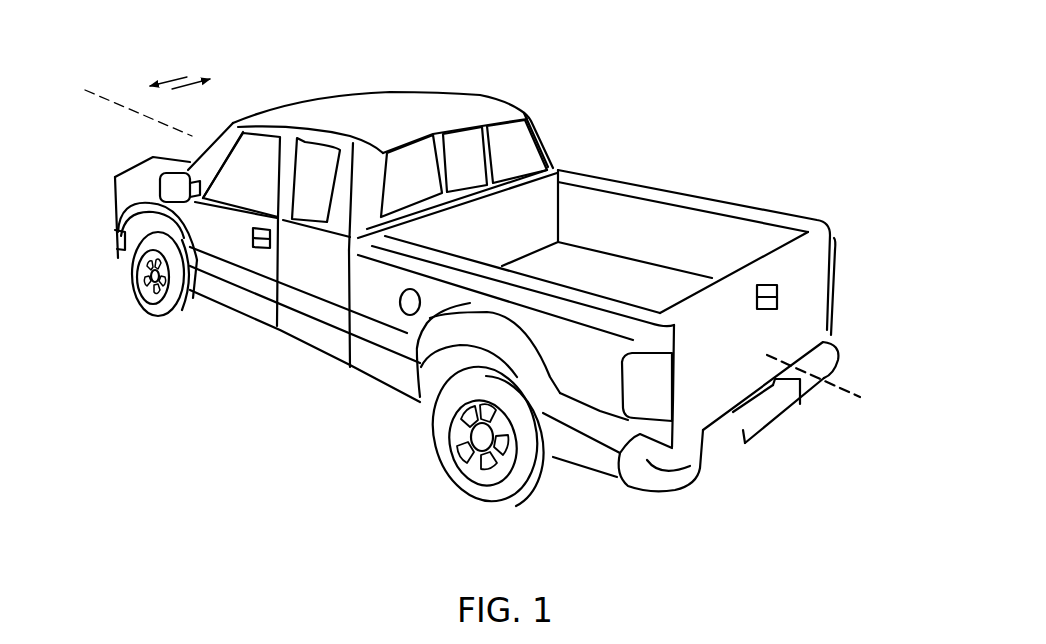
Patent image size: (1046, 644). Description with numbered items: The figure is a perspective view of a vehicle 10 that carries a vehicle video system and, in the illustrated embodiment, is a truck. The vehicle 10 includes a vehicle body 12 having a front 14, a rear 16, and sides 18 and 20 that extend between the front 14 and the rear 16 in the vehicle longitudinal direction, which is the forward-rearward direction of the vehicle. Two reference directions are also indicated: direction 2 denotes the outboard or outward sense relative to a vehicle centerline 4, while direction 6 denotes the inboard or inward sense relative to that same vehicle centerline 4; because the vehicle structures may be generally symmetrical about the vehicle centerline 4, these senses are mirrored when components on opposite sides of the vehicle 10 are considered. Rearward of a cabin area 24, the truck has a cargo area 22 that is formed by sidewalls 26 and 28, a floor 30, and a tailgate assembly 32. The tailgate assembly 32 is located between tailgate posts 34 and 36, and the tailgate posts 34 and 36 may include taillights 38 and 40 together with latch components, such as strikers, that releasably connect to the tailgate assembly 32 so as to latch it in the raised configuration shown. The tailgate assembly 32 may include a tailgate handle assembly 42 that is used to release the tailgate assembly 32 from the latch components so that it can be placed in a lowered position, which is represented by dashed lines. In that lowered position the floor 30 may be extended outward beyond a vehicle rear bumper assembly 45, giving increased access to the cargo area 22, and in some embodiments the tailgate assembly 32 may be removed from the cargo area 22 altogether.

The vehicle 10 is at (702, 75).
The vehicle body 12 is at (510, 92).
The front 14 is at (142, 150).
The rear 16 is at (864, 240).
The side 18 is at (282, 343).
The side 20 is at (598, 91).
The cargo area 22 is at (760, 160).
The cabin area 24 is at (412, 83).
The sidewall 26 is at (418, 360).
The sidewall 28 is at (690, 210).
The floor 30 is at (572, 254).
The tailgate assembly 32 is at (822, 350).
The tailgate post 34 is at (643, 435).
The tailgate post 36 is at (830, 242).
The taillight 38 is at (663, 398).
The taillight 40 is at (832, 288).
The tailgate handle assembly 42 is at (720, 272).
The vehicle rear bumper assembly 45 is at (725, 455).
The direction 2 is at (180, 90).
The vehicle centerline 4 is at (833, 388).
The direction 6 is at (177, 76).